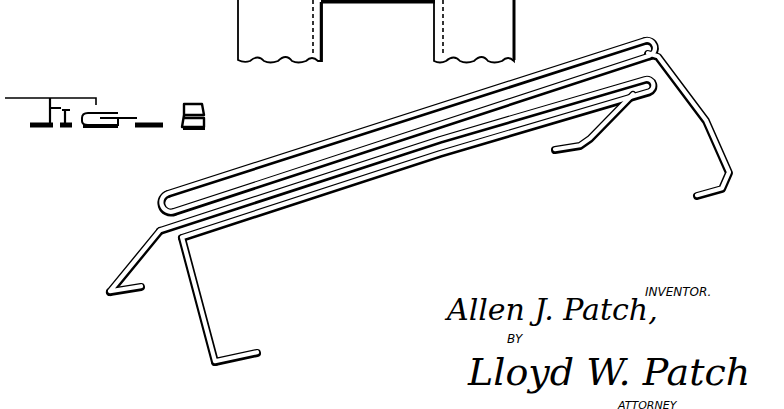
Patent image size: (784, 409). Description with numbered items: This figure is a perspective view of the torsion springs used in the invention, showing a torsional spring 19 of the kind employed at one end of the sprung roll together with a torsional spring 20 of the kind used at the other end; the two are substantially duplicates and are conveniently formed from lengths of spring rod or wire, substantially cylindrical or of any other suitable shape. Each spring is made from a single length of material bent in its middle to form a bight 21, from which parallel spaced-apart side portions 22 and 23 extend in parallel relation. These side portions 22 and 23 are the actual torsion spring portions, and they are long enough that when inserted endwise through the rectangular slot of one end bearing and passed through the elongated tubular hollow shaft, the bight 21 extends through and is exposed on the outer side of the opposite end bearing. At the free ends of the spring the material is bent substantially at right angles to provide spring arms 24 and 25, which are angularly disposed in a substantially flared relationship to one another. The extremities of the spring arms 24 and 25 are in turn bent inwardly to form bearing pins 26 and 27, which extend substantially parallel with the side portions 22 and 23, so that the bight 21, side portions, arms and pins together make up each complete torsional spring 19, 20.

The torsional spring 19 is at (646, 3).
The torsional spring 20 is at (475, 145).
The bight 21 is at (153, 206).
The side portion 22 is at (264, 177).
The side portion 23 is at (400, 110).
The spring arm 24 is at (137, 253).
The spring arm 25 is at (198, 285).
The bearing pin 26 is at (132, 296).
The bearing pin 27 is at (249, 362).